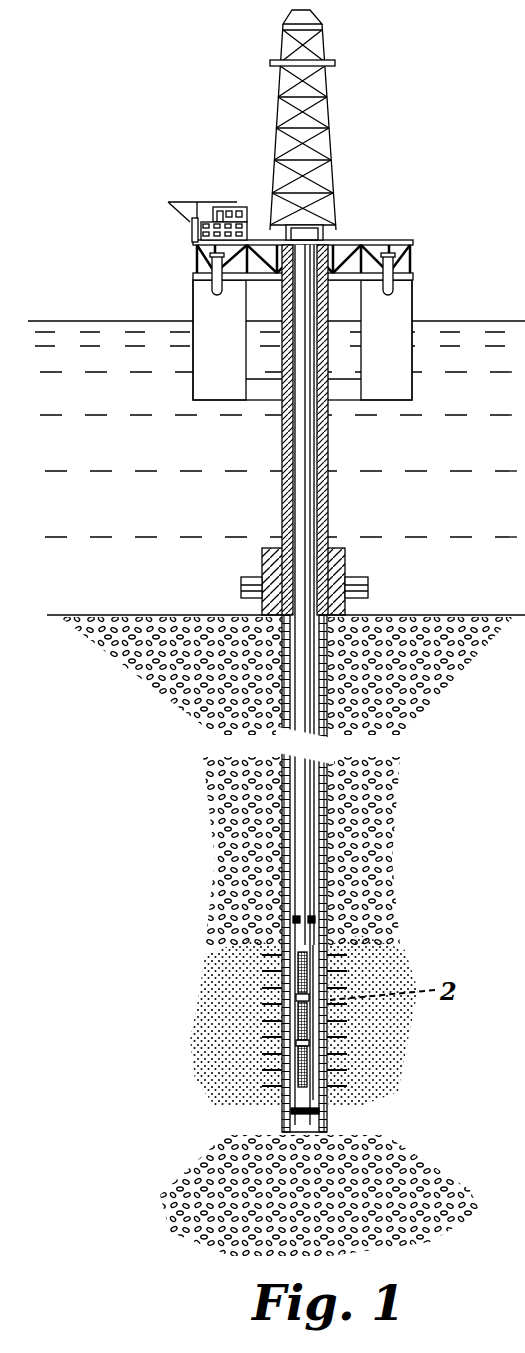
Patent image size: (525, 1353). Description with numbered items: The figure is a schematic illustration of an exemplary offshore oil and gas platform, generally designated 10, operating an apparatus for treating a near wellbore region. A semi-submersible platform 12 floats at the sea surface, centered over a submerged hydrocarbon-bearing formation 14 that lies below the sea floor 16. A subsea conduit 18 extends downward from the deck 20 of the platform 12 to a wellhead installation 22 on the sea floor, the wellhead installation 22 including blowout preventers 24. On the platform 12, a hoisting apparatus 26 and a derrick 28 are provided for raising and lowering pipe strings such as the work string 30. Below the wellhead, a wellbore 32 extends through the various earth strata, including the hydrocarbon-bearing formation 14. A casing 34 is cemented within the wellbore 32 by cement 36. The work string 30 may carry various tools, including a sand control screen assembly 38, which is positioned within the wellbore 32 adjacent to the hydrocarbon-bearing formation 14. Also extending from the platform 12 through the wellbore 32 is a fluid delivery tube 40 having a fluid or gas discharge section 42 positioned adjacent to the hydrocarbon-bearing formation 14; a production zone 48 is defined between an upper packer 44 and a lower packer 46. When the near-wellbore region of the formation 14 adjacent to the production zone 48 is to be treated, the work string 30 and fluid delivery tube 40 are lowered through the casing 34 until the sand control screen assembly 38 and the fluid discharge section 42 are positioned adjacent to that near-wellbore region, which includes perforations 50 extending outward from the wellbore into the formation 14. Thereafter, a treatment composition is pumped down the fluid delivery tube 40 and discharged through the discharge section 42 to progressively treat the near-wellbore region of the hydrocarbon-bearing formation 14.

The offshore oil and gas platform 10 is at (165, 96).
The semi-submersible platform 12 is at (412, 240).
The hydrocarbon-bearing formation 14 is at (200, 987).
The sea floor 16 is at (507, 617).
The subsea conduit 18 is at (282, 502).
The deck 20 is at (410, 277).
The wellhead installation 22 is at (262, 560).
The blowout preventers 24 is at (368, 587).
The hoisting apparatus 26 is at (300, 225).
The derrick 28 is at (327, 46).
The work string 30 is at (310, 508).
The wellbore 32 is at (328, 816).
The casing 34 is at (282, 824).
The cement 36 is at (328, 846).
The sand control screen assembly 38 is at (300, 1030).
The fluid delivery tube 40 is at (313, 873).
The fluid discharge section 42 is at (313, 1100).
The packer 44 is at (328, 918).
The packer 46 is at (328, 1112).
The production zone 48 is at (328, 943).
The perforations 50 is at (280, 1085).